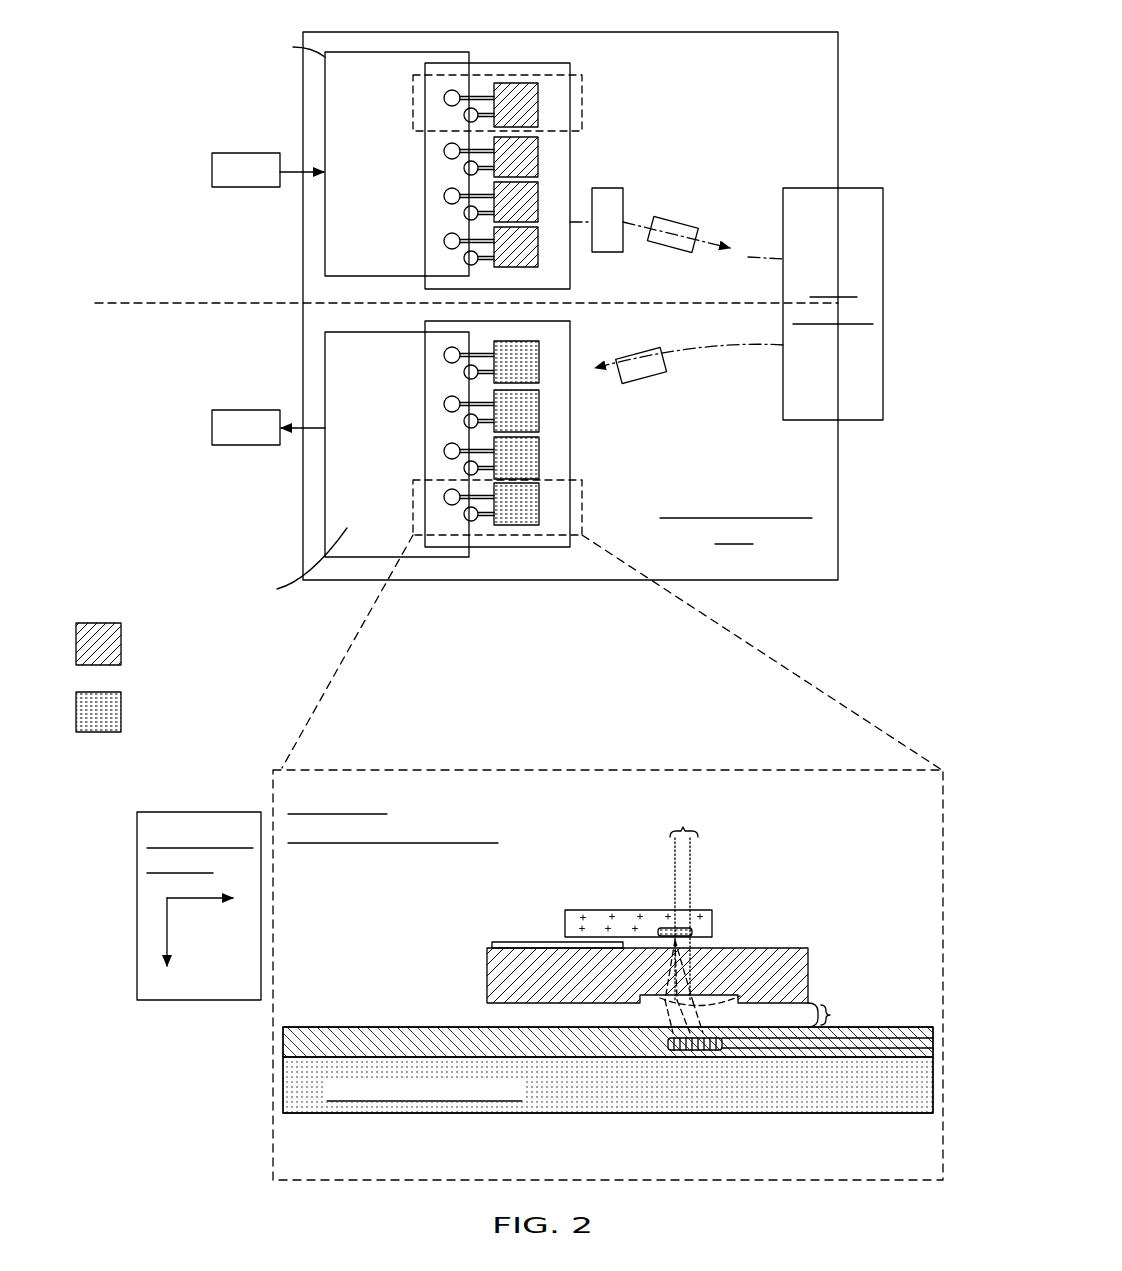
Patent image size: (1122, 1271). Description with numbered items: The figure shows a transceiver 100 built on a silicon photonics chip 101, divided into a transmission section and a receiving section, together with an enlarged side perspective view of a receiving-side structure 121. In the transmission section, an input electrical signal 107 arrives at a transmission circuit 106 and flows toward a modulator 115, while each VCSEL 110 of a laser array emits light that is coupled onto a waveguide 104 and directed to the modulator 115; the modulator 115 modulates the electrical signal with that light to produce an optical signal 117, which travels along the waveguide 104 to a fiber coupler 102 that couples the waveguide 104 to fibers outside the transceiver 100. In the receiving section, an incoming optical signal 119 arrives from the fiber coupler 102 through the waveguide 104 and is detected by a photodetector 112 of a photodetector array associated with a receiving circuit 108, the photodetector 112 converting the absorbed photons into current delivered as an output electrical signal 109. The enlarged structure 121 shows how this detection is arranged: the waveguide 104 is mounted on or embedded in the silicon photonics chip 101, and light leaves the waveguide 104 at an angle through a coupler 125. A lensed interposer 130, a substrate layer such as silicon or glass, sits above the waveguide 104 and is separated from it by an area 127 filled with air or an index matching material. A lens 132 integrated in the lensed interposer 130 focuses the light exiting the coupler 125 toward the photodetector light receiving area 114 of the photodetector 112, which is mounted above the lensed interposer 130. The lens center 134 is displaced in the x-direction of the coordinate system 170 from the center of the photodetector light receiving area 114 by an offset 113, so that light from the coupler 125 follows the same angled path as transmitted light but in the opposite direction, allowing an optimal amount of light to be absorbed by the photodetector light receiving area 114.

The transceiver 100 is at (514, 600).
The silicon photonics chip 101 is at (777, 579).
The fiber coupler 102 is at (855, 188).
The waveguide 104 is at (762, 262).
The transmission circuit 106 is at (325, 132).
The input electrical signal 107 is at (212, 172).
The receiving circuit 108 is at (325, 390).
The output electrical signal 109 is at (228, 447).
The VCSEL 110 is at (178, 642).
The photodetector 112 is at (195, 722).
The offset 113 is at (686, 812).
The photodetector light receiving area 114 is at (652, 927).
The modulator 115 is at (612, 188).
The optical signal 117 is at (693, 228).
The optical signal 119 is at (645, 381).
The structure 121 is at (372, 768).
The coupler 125 is at (711, 1060).
The area 127 is at (855, 1015).
The lensed interposer 130 is at (785, 977).
The lens 132 is at (730, 986).
The lens center 134 is at (699, 973).
The coordinate system 170 is at (202, 1002).